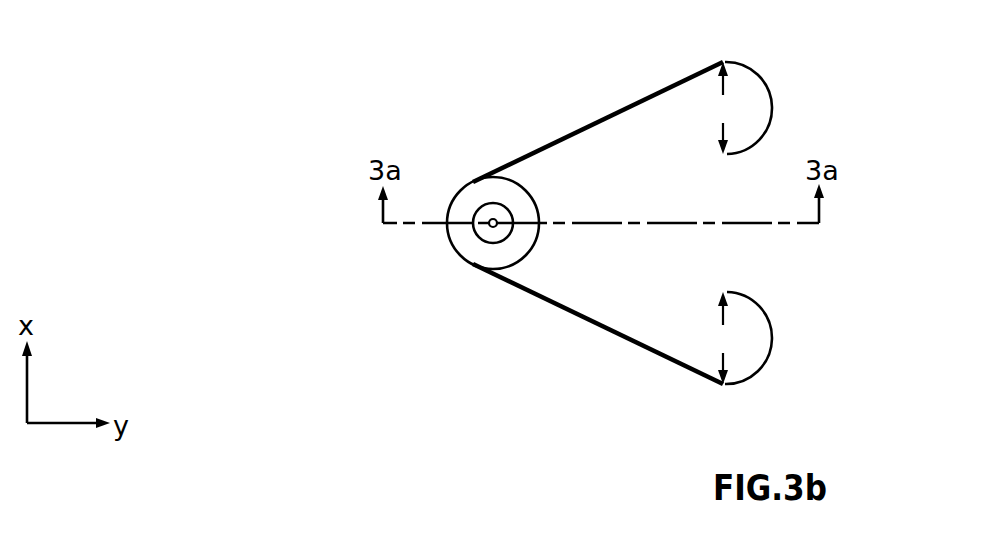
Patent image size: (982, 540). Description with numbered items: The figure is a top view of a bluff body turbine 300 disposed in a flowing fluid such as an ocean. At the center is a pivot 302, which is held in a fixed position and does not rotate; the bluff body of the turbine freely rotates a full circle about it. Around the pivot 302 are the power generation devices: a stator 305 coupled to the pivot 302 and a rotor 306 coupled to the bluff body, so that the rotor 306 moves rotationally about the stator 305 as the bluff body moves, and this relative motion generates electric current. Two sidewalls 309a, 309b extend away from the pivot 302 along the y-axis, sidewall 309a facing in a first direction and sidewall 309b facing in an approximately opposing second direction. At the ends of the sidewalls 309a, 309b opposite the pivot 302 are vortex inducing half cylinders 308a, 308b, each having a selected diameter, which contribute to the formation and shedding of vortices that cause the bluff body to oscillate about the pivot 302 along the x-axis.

The bluff body turbine 300 is at (578, 46).
The pivot 302 is at (489, 216).
The stator 305 is at (505, 215).
The rotor 306 is at (518, 245).
The half cylinder 308a is at (765, 310).
The half cylinder 308b is at (762, 70).
The sidewall 309a is at (598, 327).
The sidewall 309b is at (610, 108).